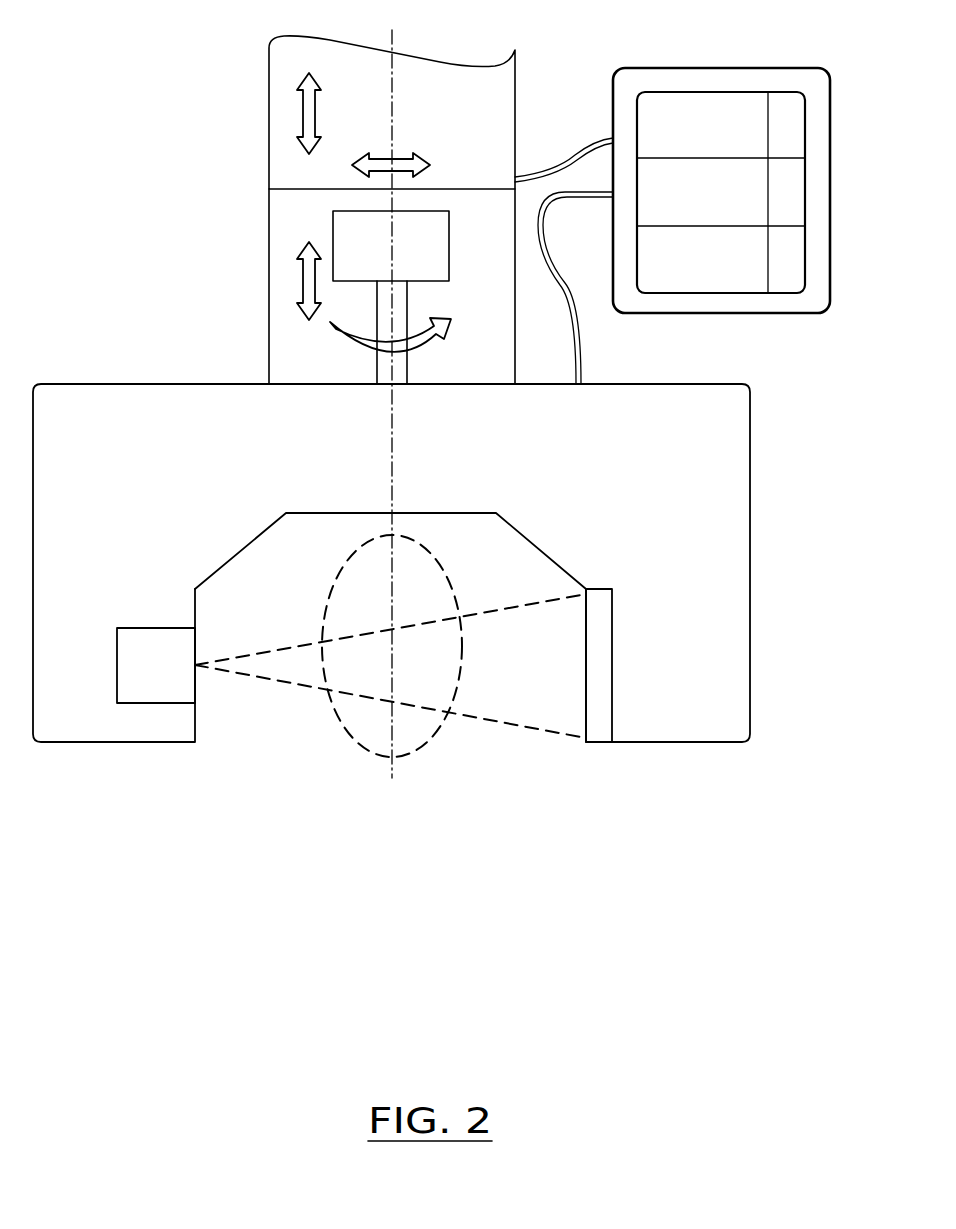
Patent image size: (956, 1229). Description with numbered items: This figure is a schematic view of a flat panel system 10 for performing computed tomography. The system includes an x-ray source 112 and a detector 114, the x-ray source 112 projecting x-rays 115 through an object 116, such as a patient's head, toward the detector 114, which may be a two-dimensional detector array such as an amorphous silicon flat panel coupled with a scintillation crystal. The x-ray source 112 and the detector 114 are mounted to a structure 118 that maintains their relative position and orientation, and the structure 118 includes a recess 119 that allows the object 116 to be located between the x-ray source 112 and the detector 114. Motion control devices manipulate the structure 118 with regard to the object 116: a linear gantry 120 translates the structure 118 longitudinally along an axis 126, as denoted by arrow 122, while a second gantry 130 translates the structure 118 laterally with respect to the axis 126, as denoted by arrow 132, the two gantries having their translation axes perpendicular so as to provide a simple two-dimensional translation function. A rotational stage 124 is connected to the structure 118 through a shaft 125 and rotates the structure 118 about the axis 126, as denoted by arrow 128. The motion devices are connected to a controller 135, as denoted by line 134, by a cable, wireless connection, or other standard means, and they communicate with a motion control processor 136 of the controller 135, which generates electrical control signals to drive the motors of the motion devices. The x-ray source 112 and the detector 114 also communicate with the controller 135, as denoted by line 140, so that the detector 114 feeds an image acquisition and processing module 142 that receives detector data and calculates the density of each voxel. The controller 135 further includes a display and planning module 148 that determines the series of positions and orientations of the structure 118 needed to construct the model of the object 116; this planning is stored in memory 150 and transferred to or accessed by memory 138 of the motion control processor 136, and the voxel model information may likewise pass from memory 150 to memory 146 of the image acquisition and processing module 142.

The flat panel system 10 is at (156, 95).
The x-ray source 112 is at (155, 683).
The detector 114 is at (601, 724).
The x-rays 115 is at (280, 682).
The object 116 is at (335, 708).
The structure 118 is at (726, 475).
The recess 119 is at (240, 553).
The linear gantry 120 is at (282, 325).
The arrow 122 is at (302, 290).
The rotational stage 124 is at (333, 230).
The shaft 125 is at (408, 297).
The axis 126 is at (392, 32).
The arrow 128 is at (340, 338).
The second gantry 130 is at (268, 60).
The arrow 132 is at (377, 158).
The line 134 is at (553, 165).
The controller 135 is at (657, 68).
The motion control processor 136 is at (692, 108).
The memory 138 is at (792, 113).
The line 140 is at (582, 335).
The image acquisition and processing module 142 is at (740, 182).
The memory 146 is at (792, 195).
The display and planning module 148 is at (718, 282).
The memory 150 is at (792, 253).